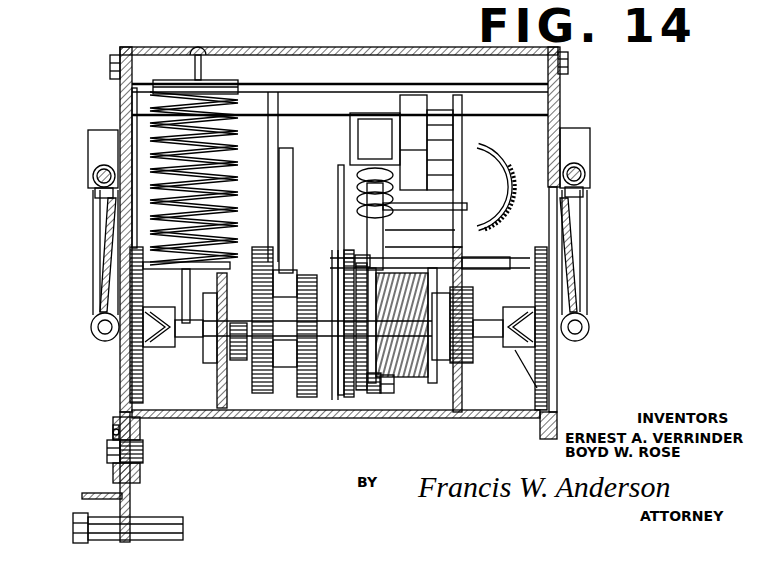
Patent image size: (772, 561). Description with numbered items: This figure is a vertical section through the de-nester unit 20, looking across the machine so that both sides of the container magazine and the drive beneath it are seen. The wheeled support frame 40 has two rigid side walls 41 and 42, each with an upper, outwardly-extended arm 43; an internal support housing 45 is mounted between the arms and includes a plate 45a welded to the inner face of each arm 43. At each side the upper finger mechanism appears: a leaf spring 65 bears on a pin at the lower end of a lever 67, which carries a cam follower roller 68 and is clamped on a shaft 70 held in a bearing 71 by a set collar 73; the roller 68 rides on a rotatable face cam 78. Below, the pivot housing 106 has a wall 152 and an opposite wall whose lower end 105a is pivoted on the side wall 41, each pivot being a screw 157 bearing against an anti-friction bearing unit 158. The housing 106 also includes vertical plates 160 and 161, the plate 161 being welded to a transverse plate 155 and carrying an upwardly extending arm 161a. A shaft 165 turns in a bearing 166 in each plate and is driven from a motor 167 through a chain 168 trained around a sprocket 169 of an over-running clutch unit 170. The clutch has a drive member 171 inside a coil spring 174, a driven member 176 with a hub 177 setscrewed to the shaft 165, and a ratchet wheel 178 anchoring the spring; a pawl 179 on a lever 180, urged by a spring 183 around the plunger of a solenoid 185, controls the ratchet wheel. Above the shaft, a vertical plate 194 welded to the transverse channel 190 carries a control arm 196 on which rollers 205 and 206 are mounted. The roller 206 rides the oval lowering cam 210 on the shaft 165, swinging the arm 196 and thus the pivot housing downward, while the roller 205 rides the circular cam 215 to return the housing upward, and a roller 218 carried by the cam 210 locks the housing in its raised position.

The de-nester unit 20 is at (656, 100).
The wheeled support frame 40 is at (88, 493).
The side wall 41 is at (131, 500).
The side wall 42 is at (557, 392).
The arm 43 is at (120, 101).
The internal support housing 45 is at (146, 47).
The plate 45a is at (121, 116).
The leaf spring 65 is at (106, 214).
The lever 67 is at (93, 238).
The cam follower roller 68 is at (92, 333).
The shaft 70 is at (98, 184).
The bearing 71 is at (90, 144).
The set collar 73 is at (93, 174).
The face cam 78 is at (138, 357).
The lower end 105a is at (142, 472).
The pivot housing 106 is at (144, 431).
The wall 152 is at (557, 424).
The transverse plate 155 is at (491, 418).
The screw 157 is at (107, 452).
The anti-friction bearing unit 158 is at (113, 432).
The vertical plate 160 is at (217, 393).
The vertical plate 161 is at (463, 385).
The arm 161a is at (462, 94).
The shaft 165 is at (477, 320).
The bearing 166 is at (168, 348).
The motor 167 is at (492, 160).
The chain 168 is at (353, 204).
The sprocket 169 is at (340, 385).
The clutch unit 170 is at (410, 388).
The drive member 171 is at (362, 380).
The coil spring 174 is at (369, 385).
The driven member 176 is at (430, 262).
The hub 177 is at (465, 262).
The ratchet wheel 178 is at (367, 418).
The pawl 179 is at (363, 260).
The lever 180 is at (373, 237).
The spring 183 is at (355, 177).
The solenoid 185 is at (375, 127).
The transverse channel 190 is at (262, 97).
The vertical plate 194 is at (275, 132).
The control arm 196 is at (287, 175).
The roller 205 is at (314, 312).
The roller 206 is at (243, 362).
The lowering cam 210 is at (250, 395).
The cam 215 is at (318, 395).
The roller 218 is at (226, 410).